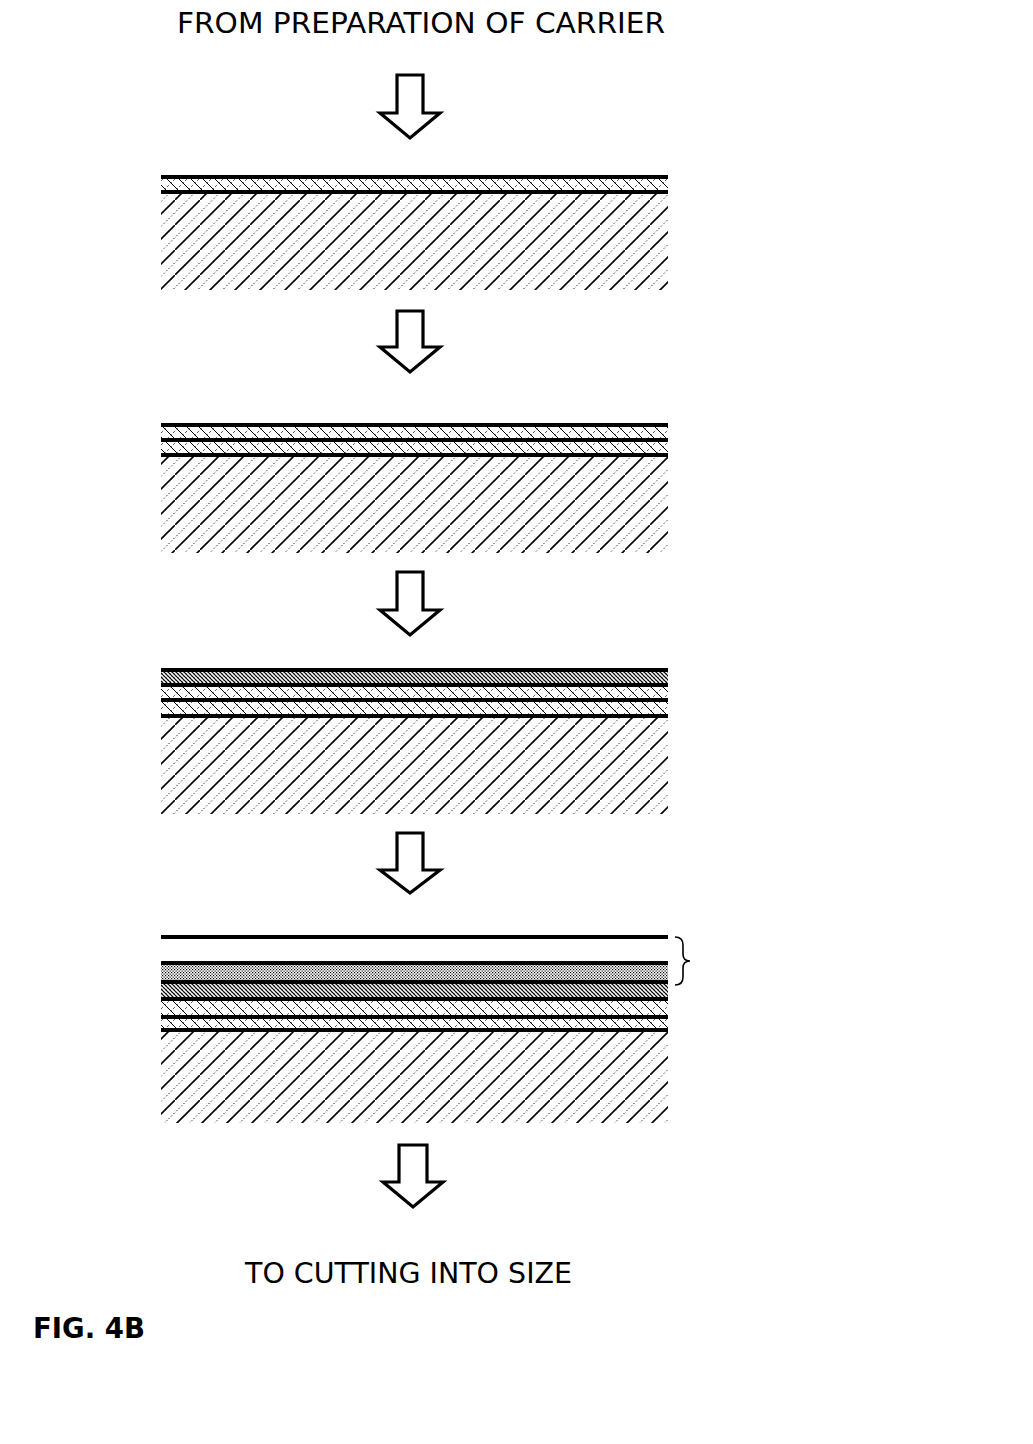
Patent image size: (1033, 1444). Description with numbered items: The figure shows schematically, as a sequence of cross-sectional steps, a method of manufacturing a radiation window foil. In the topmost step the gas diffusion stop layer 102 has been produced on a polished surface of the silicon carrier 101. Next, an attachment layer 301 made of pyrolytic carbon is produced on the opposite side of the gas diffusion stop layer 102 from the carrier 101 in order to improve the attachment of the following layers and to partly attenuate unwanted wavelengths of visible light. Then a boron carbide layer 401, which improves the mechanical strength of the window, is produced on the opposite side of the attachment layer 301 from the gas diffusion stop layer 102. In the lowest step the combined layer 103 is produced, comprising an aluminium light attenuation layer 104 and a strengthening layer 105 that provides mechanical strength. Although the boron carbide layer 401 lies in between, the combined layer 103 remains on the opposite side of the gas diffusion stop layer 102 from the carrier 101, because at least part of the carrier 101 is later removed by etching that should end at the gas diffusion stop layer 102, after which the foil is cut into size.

The carrier 101 is at (663, 254).
The gas diffusion stop layer 102 is at (666, 186).
The combined layer 103 is at (707, 961).
The light attenuation layer 104 is at (160, 973).
The strengthening layer 105 is at (160, 940).
The attachment layer 301 is at (160, 432).
The boron carbide layer 401 is at (160, 678).